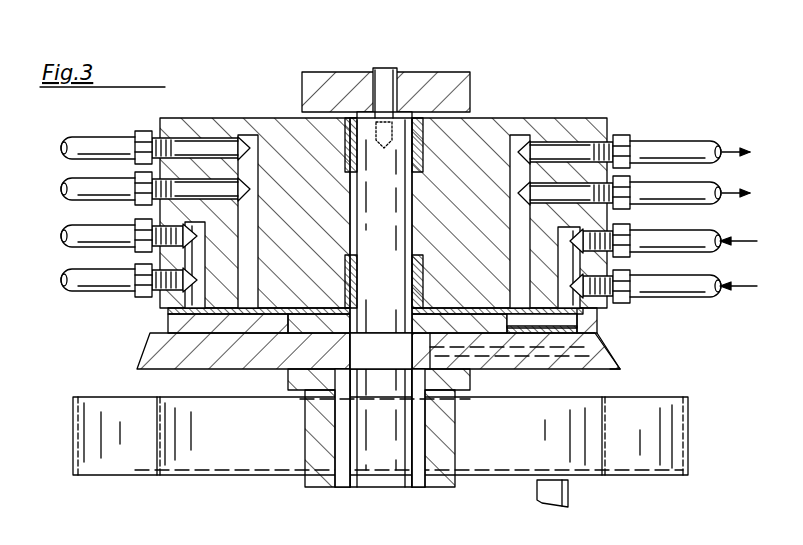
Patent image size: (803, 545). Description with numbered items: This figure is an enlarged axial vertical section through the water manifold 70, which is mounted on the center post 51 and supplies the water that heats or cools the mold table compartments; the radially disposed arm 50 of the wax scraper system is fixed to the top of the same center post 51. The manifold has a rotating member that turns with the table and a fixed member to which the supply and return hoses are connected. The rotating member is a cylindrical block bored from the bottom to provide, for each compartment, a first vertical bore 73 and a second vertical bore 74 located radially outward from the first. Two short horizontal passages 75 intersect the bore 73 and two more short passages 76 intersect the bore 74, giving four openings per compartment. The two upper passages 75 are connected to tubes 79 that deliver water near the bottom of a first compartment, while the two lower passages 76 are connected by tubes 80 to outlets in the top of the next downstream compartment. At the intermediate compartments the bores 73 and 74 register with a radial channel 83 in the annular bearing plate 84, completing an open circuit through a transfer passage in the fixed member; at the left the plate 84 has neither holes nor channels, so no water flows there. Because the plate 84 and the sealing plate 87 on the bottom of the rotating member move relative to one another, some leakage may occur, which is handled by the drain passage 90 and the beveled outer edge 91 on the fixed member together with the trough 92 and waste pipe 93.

The radially disposed arm 50 is at (310, 84).
The center post 51 is at (390, 283).
The water manifold 70 is at (541, 108).
The first vertical bore 73 is at (256, 136).
The second vertical bore 74 is at (190, 296).
The short horizontal passages 75 is at (208, 183).
The short passages 76 is at (180, 243).
The tubes 79 is at (90, 183).
The tubes 80 is at (72, 274).
The radial channel 83 is at (535, 320).
The annular bearing plate 84 is at (245, 333).
The sealing plate 87 is at (497, 312).
The drain passage 90 is at (566, 340).
The beveled outer edge 91 is at (640, 386).
The trough 92 is at (688, 443).
The waste pipe 93 is at (570, 496).